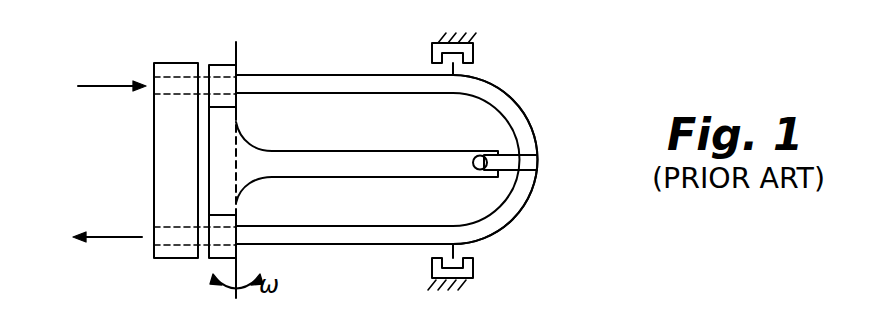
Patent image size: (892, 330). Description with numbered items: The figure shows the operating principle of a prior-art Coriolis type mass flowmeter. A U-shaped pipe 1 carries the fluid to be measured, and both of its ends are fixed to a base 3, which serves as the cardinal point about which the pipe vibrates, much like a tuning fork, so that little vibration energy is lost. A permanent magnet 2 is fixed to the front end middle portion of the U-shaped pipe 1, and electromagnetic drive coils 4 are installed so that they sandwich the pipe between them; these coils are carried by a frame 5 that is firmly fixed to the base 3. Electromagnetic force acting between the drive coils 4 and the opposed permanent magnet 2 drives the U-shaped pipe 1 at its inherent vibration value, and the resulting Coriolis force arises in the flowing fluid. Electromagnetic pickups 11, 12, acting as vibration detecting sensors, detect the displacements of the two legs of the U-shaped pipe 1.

The U-shaped pipe 1 is at (278, 75).
The permanent magnet 2 is at (522, 190).
The base 3 is at (220, 64).
The electromagnetic drive coils 4 is at (495, 152).
The frame 5 is at (293, 177).
The electromagnetic pickup 11 is at (473, 53).
The electromagnetic pickup 12 is at (474, 267).